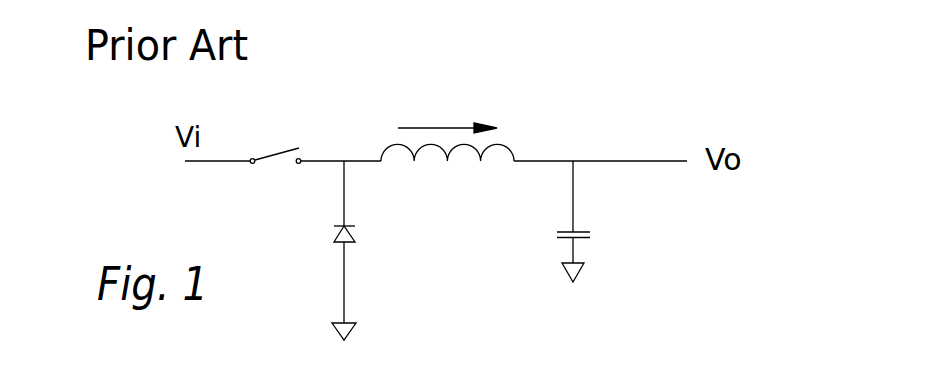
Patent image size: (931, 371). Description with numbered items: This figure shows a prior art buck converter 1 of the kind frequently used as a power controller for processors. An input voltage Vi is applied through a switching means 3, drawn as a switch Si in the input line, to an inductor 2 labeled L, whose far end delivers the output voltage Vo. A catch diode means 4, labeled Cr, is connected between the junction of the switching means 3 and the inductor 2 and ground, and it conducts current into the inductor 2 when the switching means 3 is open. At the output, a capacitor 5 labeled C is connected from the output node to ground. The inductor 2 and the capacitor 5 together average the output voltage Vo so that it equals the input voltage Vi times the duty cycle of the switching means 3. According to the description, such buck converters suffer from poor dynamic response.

The buck converter 1 is at (420, 50).
The inductor 2 is at (429, 137).
The switching means 3 is at (279, 139).
The catch diode means 4 is at (377, 235).
The capacitor 5 is at (583, 218).